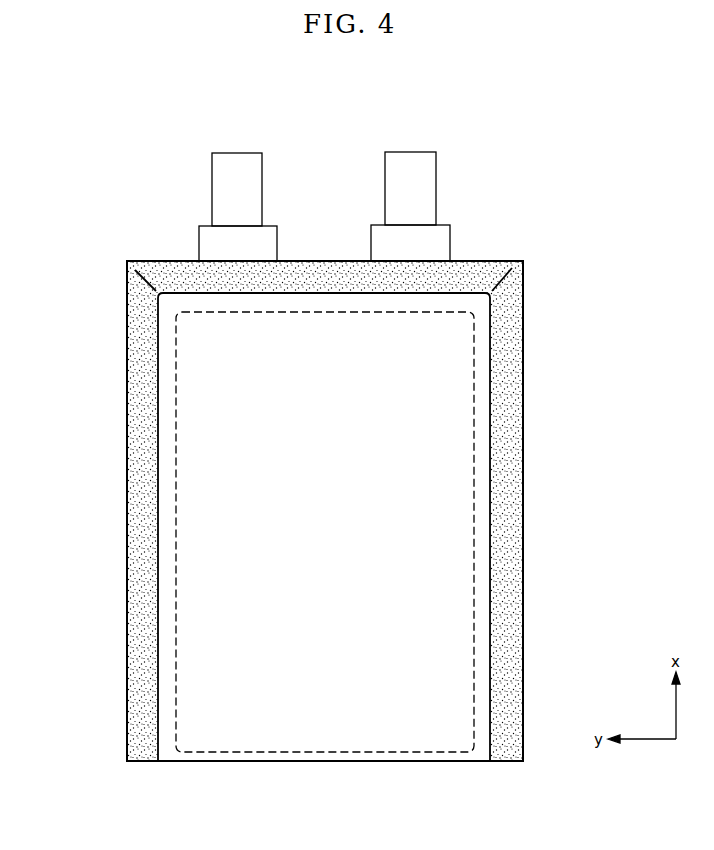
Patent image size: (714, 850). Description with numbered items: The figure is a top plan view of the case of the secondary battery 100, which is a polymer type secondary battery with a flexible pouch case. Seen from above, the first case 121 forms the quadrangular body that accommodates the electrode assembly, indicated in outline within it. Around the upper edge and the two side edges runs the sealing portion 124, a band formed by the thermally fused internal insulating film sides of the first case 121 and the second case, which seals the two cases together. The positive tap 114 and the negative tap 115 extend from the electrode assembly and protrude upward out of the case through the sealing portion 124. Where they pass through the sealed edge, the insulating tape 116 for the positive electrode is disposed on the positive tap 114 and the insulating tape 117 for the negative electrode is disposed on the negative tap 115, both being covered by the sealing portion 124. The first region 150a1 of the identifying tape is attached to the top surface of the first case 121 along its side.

The secondary battery 100 is at (568, 113).
The positive tap 114 is at (423, 163).
The negative tap 115 is at (257, 163).
The insulating tape for a positive electrode 116 is at (440, 236).
The insulating tape for a negative electrode 117 is at (273, 235).
The first case 121 is at (425, 474).
The sealing portion 124 is at (486, 537).
The first region of the identifying tape 150a1 is at (135, 401).